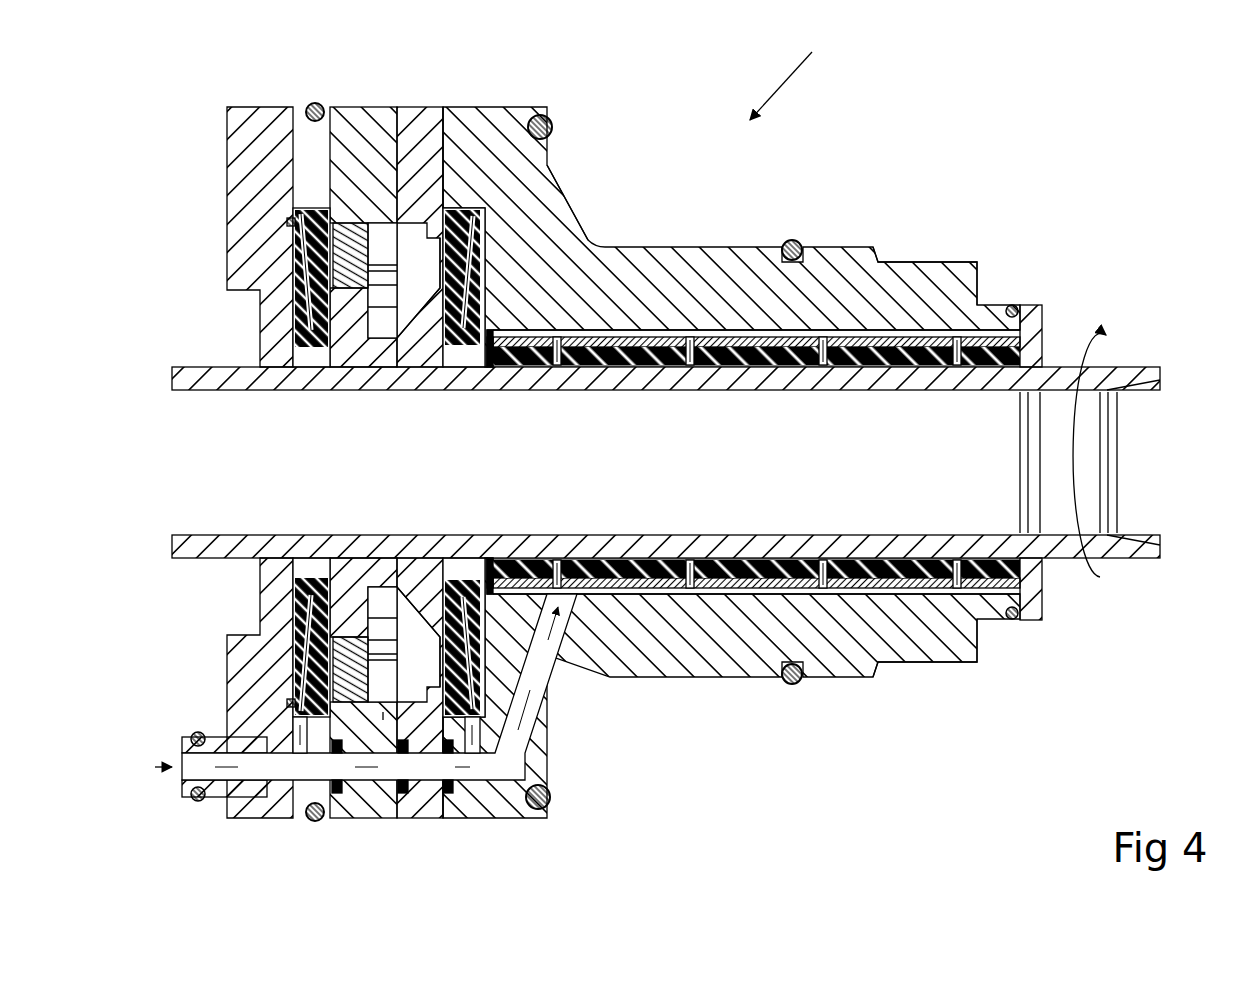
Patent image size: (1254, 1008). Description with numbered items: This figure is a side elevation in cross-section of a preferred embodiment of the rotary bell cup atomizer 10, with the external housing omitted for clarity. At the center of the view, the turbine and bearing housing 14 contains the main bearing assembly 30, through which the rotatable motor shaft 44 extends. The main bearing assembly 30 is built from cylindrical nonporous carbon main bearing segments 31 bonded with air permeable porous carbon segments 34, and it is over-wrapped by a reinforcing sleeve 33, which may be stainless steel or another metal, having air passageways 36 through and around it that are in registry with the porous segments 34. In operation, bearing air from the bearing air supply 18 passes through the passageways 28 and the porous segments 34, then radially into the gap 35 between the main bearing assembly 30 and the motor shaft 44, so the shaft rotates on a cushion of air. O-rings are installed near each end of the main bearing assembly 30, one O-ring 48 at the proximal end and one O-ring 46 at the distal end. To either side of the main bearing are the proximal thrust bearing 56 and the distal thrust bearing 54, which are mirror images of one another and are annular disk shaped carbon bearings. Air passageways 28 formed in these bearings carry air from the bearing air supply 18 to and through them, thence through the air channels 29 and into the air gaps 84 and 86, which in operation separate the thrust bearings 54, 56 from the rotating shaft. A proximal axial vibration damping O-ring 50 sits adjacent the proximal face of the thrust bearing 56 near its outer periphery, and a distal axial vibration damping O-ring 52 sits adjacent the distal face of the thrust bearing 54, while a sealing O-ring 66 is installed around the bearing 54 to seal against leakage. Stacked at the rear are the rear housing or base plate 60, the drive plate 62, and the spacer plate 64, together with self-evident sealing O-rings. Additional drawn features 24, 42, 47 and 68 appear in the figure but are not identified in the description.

The rotary bell cup atomizer 10 is at (793, 72).
The turbine and bearing housing 14 is at (812, 247).
The bearing air supply 18 is at (182, 770).
The seal assembly 24 is at (340, 222).
The air passageways 28 is at (497, 730).
The air channels 29 is at (372, 597).
The main bearing assembly 30 is at (597, 332).
The nonporous carbon main bearing segments 31 is at (860, 255).
The sleeve 33 is at (660, 340).
The air permeable porous carbon segments 34 is at (688, 590).
The gap 35 is at (715, 345).
The air passageways 36 is at (692, 572).
The shaft sleeve 42 is at (765, 395).
The rotatable motor shaft 44 is at (200, 367).
The O-ring 46 is at (1011, 304).
The drain passage 47 is at (385, 713).
The O-ring 48 is at (500, 338).
The proximal axial vibration damping O-ring 50 is at (290, 224).
The distal axial vibration damping O-ring 52 is at (483, 240).
The distal thrust bearing 54 is at (545, 205).
The proximal thrust bearing 56 is at (300, 263).
The rear housing or base plate 60 is at (280, 107).
The drive plate 62 is at (350, 107).
The spacer plate 64 is at (410, 107).
The sealing O-ring 66 is at (452, 207).
The seal body 68 is at (328, 210).
The air gap 84 is at (346, 597).
The air gap 86 is at (428, 597).